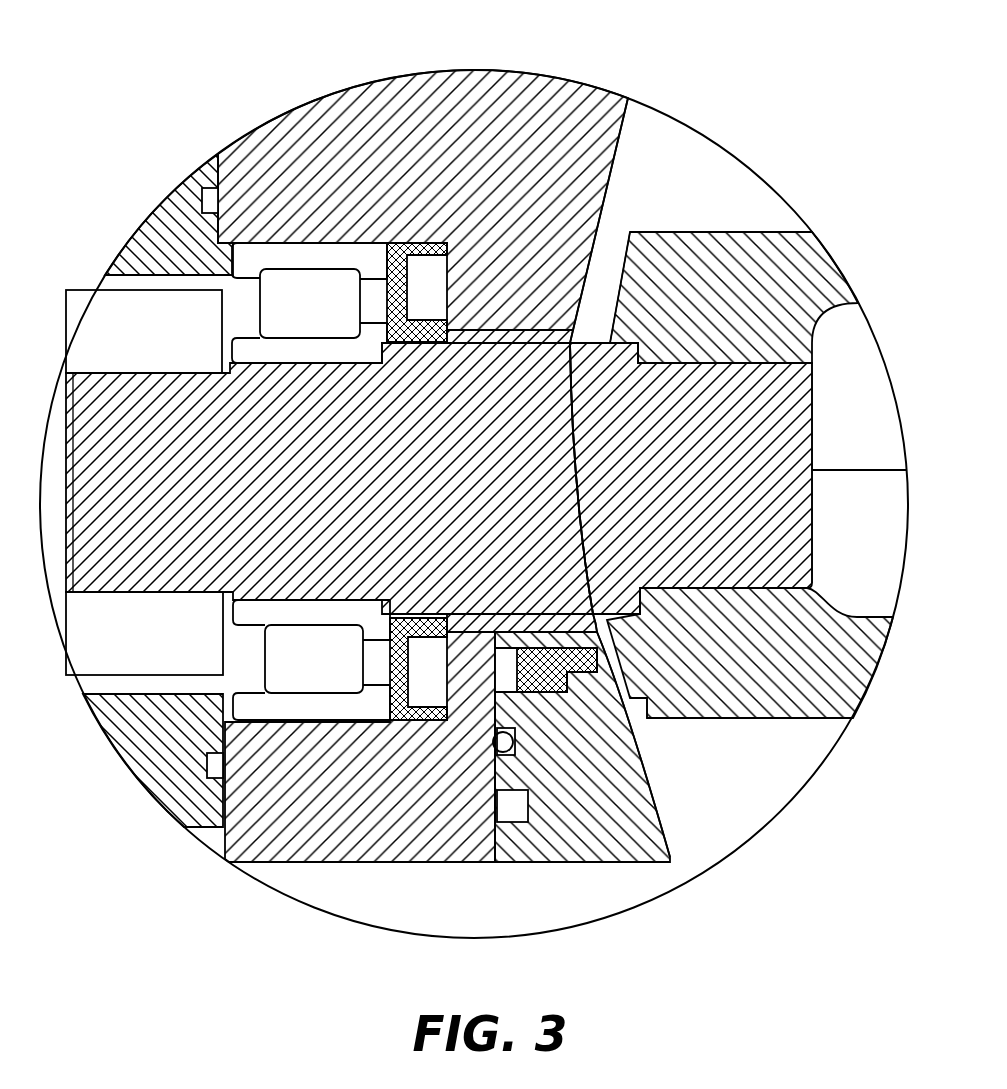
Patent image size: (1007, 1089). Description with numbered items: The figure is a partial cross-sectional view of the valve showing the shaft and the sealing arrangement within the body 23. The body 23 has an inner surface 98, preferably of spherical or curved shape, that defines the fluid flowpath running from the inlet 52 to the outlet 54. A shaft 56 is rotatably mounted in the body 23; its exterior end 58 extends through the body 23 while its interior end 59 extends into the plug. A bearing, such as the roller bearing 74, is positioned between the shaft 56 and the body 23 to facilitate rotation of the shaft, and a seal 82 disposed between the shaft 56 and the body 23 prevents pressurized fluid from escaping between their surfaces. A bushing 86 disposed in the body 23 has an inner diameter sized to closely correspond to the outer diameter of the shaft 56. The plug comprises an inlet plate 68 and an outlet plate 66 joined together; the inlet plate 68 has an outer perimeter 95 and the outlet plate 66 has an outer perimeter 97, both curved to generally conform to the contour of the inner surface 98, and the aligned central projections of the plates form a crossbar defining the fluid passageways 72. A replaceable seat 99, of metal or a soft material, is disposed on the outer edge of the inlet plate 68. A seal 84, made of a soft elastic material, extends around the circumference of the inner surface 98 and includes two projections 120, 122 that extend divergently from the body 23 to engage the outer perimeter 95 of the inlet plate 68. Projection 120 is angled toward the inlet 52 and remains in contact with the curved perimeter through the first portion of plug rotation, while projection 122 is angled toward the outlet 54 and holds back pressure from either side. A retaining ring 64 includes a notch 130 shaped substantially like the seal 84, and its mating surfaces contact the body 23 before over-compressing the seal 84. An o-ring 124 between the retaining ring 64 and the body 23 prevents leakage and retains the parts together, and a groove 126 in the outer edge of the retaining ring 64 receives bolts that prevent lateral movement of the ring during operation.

The body 23 is at (397, 98).
The inlet 52 is at (720, 794).
The outlet 54 is at (658, 186).
The shaft 56 is at (592, 362).
The exterior end 58 is at (93, 585).
The interior end 59 is at (812, 415).
The retaining ring 64 is at (573, 838).
The outlet plate 66 is at (796, 262).
The inlet plate 68 is at (788, 688).
The fluid passageways 72 is at (843, 427).
The roller bearing 74 is at (288, 316).
The seal 82 is at (407, 307).
The seal 84 is at (503, 657).
The bushing 86 is at (510, 338).
The outer perimeter 95 is at (600, 650).
The outer perimeter 97 is at (640, 267).
The inner surface 98 is at (628, 98).
The replaceable seat 99 is at (640, 698).
The projection 120 is at (615, 735).
The projection 122 is at (597, 612).
The o-ring 124 is at (495, 750).
The groove 126 is at (513, 803).
The notch 130 is at (523, 693).